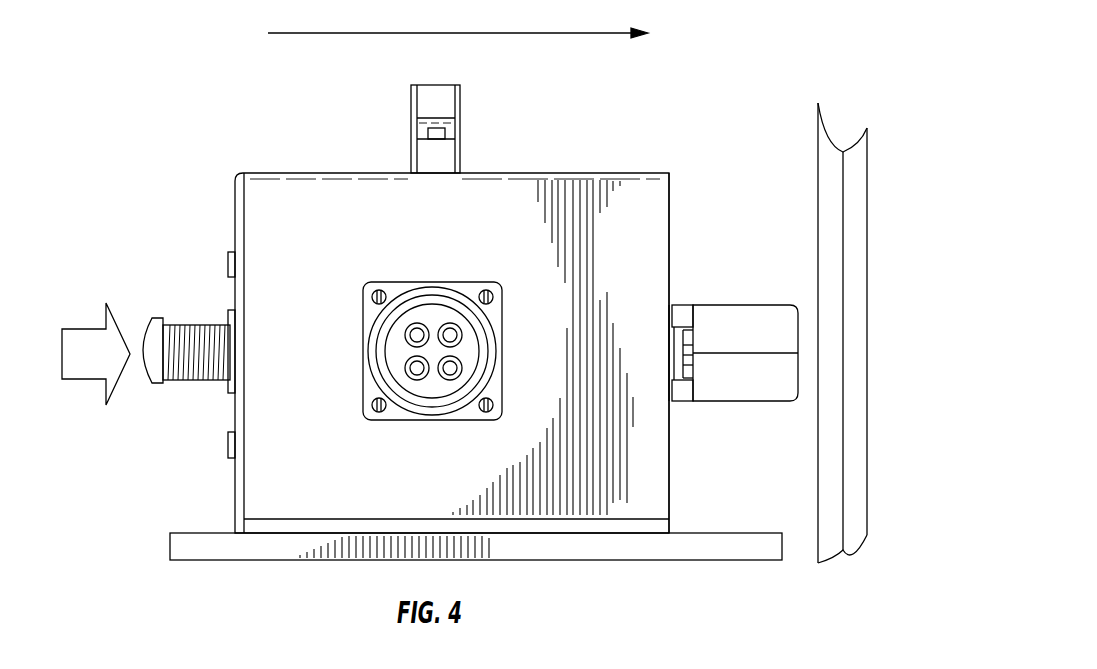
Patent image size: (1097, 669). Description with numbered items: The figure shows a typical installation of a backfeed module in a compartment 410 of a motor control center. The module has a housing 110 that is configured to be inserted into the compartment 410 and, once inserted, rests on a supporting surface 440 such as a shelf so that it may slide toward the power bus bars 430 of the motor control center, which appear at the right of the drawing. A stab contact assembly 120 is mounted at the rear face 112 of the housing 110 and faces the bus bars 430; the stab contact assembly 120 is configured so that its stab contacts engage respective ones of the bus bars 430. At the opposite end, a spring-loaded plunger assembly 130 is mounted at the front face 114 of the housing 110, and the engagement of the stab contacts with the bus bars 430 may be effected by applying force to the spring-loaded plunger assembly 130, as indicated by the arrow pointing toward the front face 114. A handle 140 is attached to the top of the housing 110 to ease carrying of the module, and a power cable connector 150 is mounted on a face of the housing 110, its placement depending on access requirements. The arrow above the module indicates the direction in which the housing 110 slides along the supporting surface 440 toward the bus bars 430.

The compartment 410 is at (160, 136).
The housing 110 is at (310, 172).
The rear face 112 is at (660, 242).
The front face 114 is at (228, 224).
The stab contact assembly 120 is at (737, 306).
The spring-loaded plunger assembly 130 is at (140, 387).
The handle 140 is at (457, 105).
The power cable connector 150 is at (467, 282).
The bus bars 430 is at (867, 258).
The supporting surface 440 is at (690, 553).